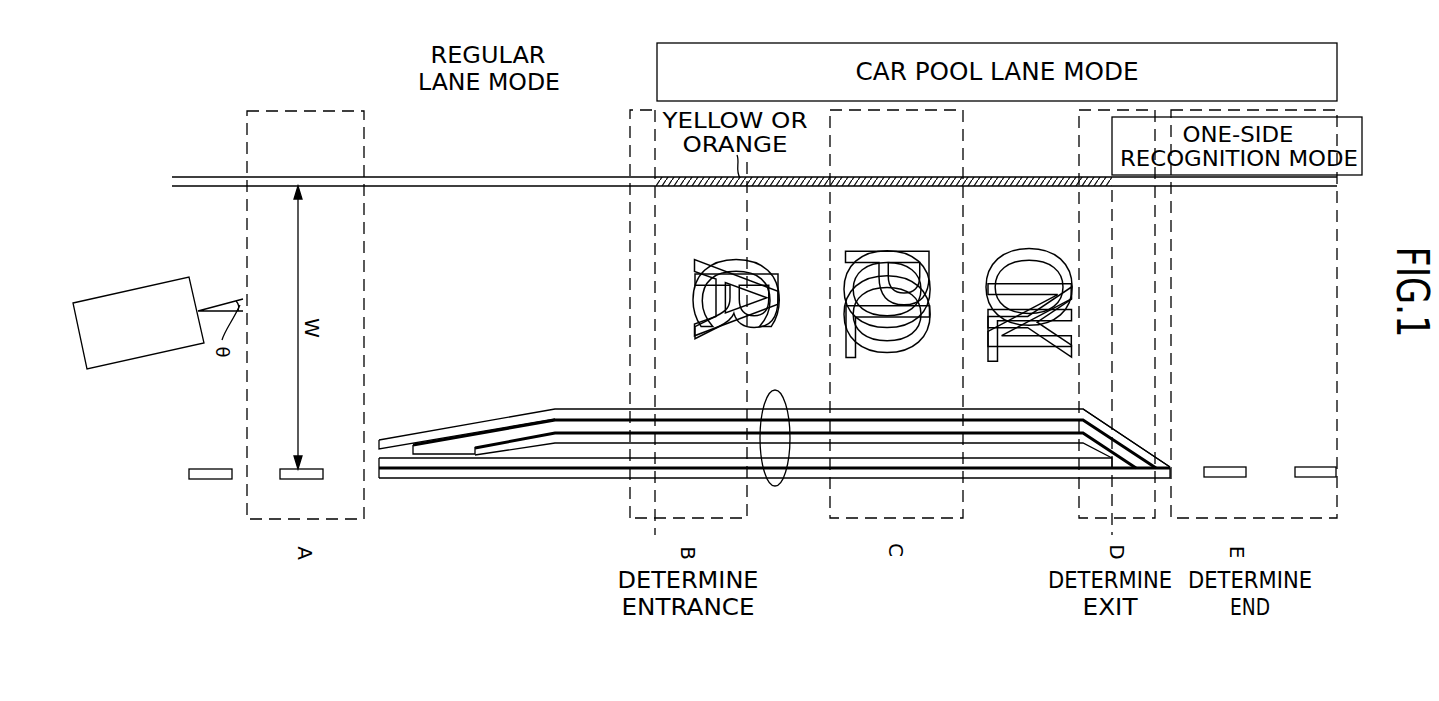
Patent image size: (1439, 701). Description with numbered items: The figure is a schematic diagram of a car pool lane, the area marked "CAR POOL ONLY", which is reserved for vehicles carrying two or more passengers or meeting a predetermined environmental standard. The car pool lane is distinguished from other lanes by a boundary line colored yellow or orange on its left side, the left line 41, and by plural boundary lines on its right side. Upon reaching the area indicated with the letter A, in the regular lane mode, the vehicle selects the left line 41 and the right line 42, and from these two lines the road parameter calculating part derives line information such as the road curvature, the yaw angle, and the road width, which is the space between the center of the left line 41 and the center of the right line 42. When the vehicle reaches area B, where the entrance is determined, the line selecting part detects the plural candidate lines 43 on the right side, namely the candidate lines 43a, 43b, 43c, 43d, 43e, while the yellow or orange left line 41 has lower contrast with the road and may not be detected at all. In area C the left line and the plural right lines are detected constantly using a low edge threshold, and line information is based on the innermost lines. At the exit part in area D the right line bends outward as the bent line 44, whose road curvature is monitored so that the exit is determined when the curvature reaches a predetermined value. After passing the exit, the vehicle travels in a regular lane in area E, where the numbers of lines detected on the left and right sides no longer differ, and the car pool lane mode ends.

The left line 41 is at (388, 176).
The right line 42 is at (317, 478).
The candidate lines 43 is at (774, 445).
The candidate line 43a is at (775, 422).
The candidate line 43b is at (777, 424).
The candidate line 43c is at (797, 430).
The candidate line 43d is at (785, 463).
The candidate line 43e is at (777, 477).
The bent line 44 is at (1133, 431).